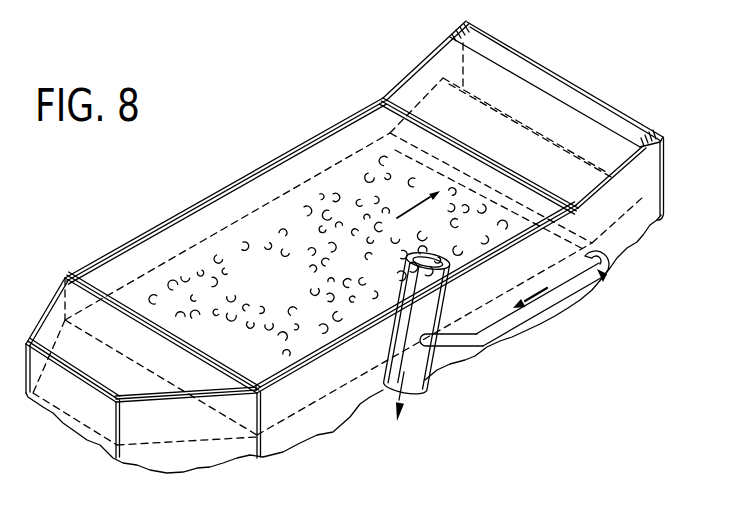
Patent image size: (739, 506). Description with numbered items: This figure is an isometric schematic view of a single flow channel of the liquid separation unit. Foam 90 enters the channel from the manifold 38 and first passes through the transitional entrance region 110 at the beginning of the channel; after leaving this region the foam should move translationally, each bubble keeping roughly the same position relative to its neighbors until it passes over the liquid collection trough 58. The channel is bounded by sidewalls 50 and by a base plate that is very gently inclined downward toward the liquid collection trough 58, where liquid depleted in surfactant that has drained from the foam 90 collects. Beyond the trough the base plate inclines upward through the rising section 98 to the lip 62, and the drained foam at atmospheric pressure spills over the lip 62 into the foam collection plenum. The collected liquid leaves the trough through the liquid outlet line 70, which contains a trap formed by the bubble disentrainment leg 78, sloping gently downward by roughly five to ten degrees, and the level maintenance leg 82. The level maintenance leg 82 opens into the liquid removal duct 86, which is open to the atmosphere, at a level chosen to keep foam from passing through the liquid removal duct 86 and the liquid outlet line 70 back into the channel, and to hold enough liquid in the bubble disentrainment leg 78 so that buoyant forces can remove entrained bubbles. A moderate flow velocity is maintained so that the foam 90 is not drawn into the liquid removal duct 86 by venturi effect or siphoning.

The manifold 38 is at (76, 407).
The sidewalls 50 is at (313, 416).
The liquid collection trough 58 is at (376, 124).
The lip 62 is at (650, 195).
The liquid outlet line 70 is at (605, 280).
The bubble disentrainment leg 78 is at (498, 334).
The level maintenance leg 82 is at (450, 346).
The liquid removal duct 86 is at (404, 372).
The foam 90 is at (262, 290).
The rising section 98 is at (632, 233).
The transitional entrance region 110 is at (65, 258).